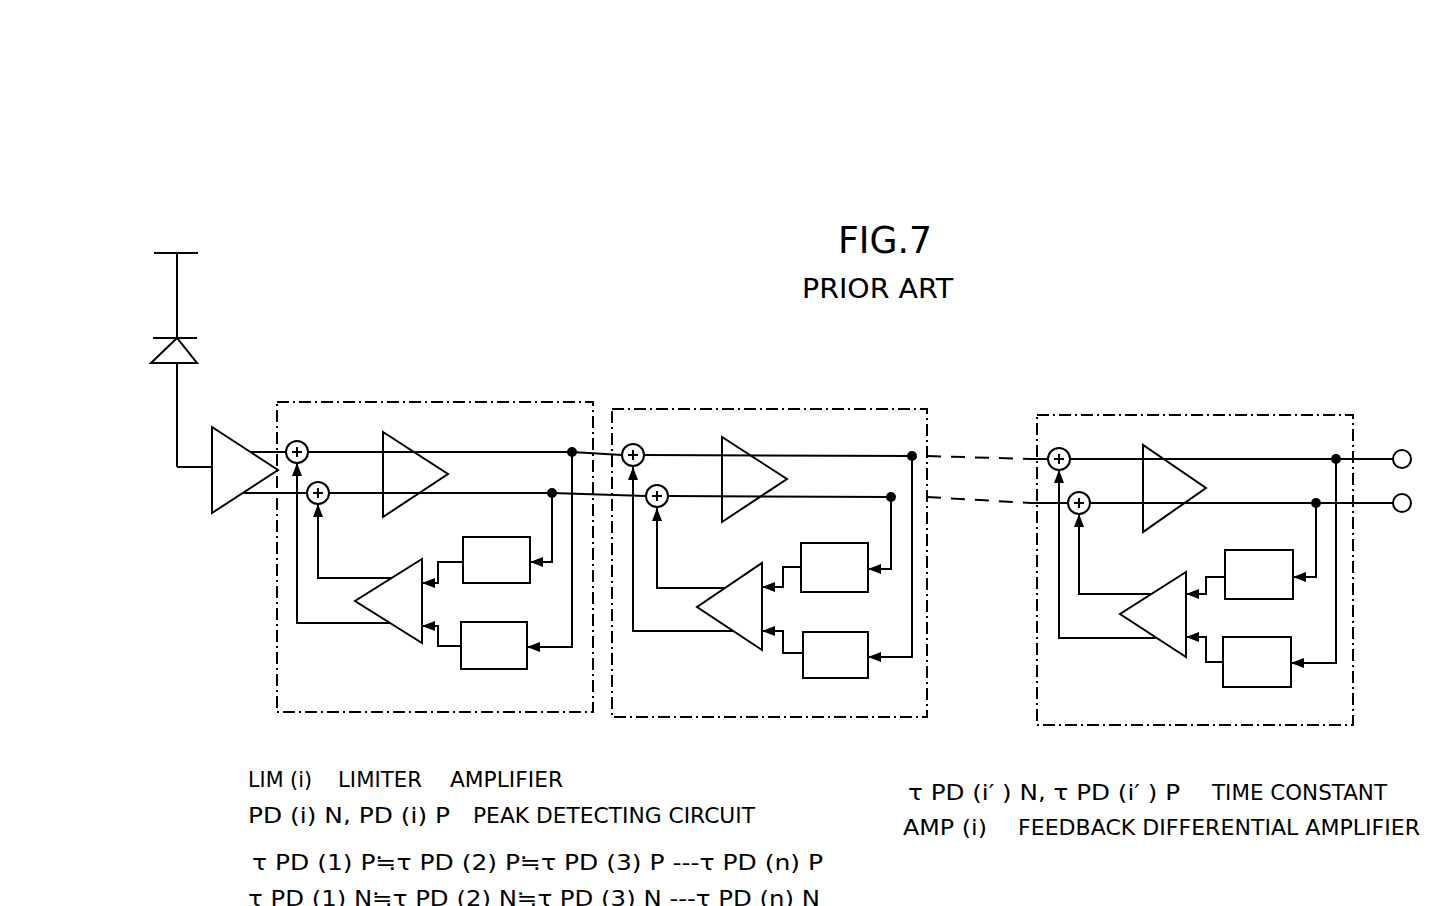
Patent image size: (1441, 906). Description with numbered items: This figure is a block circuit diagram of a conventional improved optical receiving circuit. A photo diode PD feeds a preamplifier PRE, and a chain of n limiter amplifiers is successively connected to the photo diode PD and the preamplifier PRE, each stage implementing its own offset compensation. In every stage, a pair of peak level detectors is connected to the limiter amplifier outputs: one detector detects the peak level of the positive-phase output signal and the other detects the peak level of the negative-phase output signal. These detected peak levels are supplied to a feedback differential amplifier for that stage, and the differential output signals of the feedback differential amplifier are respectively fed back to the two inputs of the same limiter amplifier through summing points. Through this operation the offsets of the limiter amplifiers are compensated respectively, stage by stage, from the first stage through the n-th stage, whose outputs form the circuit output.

The photo diode PD is at (200, 353).
The preamplifier PRE is at (242, 497).